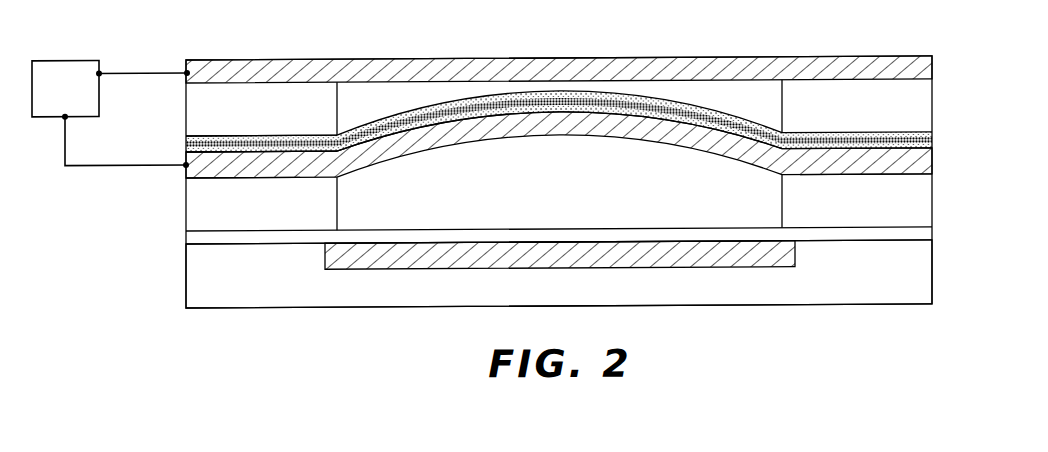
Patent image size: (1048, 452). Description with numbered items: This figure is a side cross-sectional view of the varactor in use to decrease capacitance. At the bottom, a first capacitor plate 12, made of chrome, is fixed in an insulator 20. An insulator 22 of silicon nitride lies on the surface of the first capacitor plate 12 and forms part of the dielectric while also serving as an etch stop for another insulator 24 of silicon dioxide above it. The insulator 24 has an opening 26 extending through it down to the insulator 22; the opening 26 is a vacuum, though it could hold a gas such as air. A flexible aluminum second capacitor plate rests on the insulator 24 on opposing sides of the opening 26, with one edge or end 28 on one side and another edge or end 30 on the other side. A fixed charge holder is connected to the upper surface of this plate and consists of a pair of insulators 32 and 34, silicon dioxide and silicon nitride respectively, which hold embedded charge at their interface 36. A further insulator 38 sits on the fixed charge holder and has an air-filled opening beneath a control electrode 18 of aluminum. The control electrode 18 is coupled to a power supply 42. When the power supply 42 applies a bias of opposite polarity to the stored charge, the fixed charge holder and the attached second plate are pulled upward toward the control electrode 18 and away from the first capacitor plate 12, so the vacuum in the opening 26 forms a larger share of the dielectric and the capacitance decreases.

The first capacitor plate 12 is at (765, 265).
The control electrode 18 is at (749, 67).
The insulator 20 is at (926, 272).
The insulator 22 is at (926, 236).
The insulator 24 is at (926, 190).
The opening 26 is at (546, 216).
The edge or end 28 is at (231, 182).
The edge or end 30 is at (889, 181).
The insulator 32 is at (932, 151).
The insulator 34 is at (932, 139).
The interface 36 is at (932, 144).
The insulator 38 is at (925, 95).
The power supply 42 is at (44, 118).